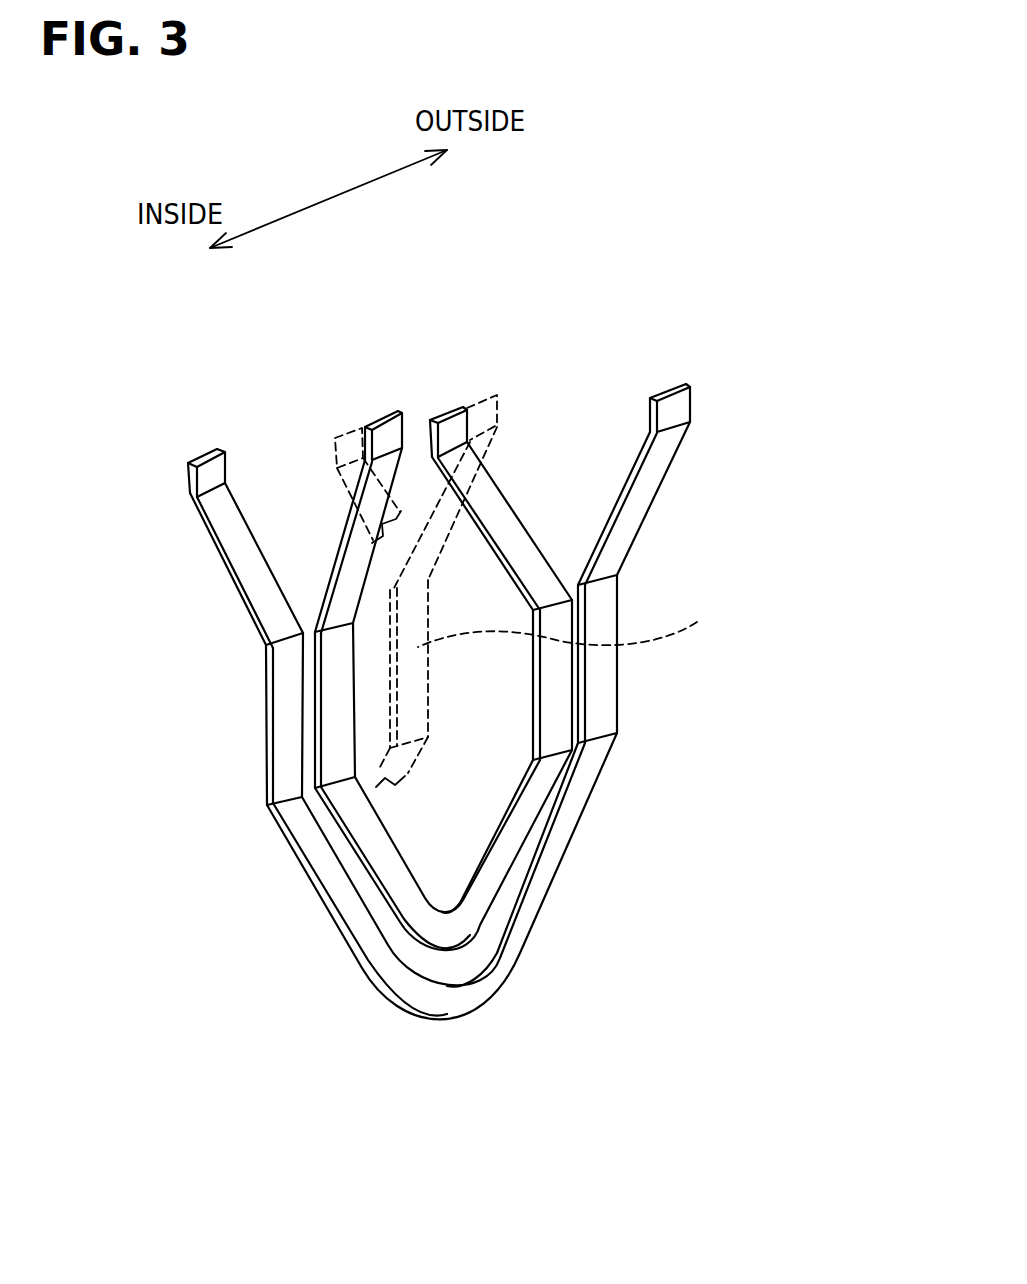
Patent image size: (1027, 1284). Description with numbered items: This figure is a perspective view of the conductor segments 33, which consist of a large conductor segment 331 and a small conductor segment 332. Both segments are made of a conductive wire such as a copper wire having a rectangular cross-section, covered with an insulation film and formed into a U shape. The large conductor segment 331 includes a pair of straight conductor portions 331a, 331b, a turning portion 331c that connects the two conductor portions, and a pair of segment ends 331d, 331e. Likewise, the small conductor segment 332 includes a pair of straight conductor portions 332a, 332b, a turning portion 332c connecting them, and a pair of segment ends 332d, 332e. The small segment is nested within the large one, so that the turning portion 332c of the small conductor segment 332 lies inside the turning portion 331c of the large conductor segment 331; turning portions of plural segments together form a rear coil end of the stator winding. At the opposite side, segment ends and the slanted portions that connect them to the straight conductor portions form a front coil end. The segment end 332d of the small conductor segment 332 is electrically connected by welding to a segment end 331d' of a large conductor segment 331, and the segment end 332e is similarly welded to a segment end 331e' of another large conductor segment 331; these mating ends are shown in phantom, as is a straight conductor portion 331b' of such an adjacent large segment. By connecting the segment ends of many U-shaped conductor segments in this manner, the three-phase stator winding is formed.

The conductor segments 33 is at (342, 985).
The large conductor segment 331 is at (662, 526).
The small conductor segment 332 is at (537, 532).
The straight conductor portion 331a is at (285, 680).
The straight conductor portion 331b is at (676, 659).
The turning portion 331c is at (434, 999).
The segment end 331d is at (184, 548).
The segment end 331e is at (695, 462).
The segment end 331d' is at (306, 438).
The segment end 331e' is at (483, 558).
The right vertical portion before bending 331b' is at (590, 625).
The straight conductor portion 332a is at (333, 725).
The straight conductor portion 332b is at (555, 733).
The turning portion 332c is at (443, 938).
The segment end 332d is at (388, 435).
The segment end 332e is at (458, 415).